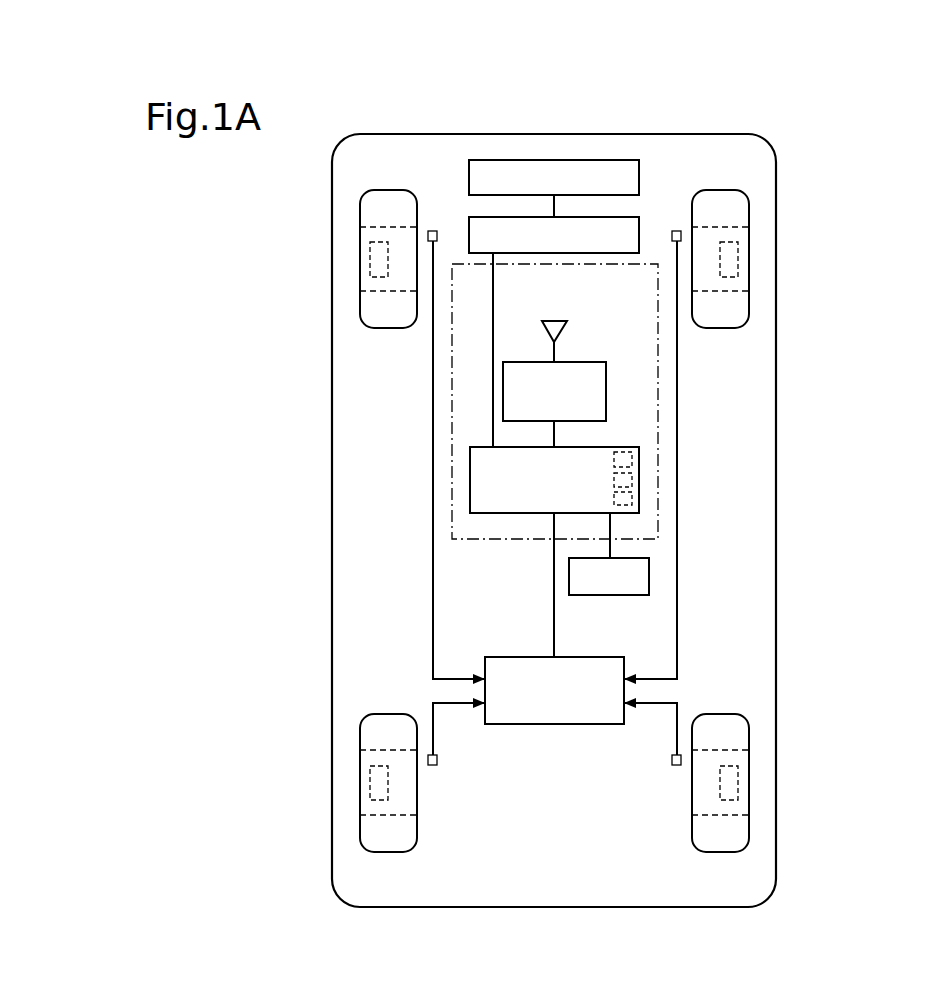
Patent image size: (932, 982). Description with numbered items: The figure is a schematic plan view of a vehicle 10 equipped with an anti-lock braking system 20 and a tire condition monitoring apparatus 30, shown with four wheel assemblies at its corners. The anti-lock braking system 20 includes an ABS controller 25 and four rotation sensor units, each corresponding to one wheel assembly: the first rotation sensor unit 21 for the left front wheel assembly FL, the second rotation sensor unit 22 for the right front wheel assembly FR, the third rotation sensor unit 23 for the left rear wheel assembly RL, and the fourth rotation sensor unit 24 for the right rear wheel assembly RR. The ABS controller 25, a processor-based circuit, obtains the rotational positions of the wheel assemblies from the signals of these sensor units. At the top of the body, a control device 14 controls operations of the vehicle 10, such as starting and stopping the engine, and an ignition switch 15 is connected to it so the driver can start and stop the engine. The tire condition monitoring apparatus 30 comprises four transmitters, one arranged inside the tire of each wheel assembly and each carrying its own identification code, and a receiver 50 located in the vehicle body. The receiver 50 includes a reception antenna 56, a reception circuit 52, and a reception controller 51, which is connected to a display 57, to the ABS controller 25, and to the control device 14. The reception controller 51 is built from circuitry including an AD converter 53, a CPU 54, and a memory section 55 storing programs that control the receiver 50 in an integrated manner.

The vehicle 10 is at (776, 119).
The control device 14 is at (625, 253).
The ignition switch 15 is at (610, 160).
The anti-lock braking system 20 is at (680, 410).
The first rotation sensor unit 21 is at (433, 231).
The second rotation sensor unit 22 is at (677, 231).
The third rotation sensor unit 23 is at (435, 765).
The fourth rotation sensor unit 24 is at (675, 765).
The ABS controller 25 is at (560, 725).
The tire condition monitoring apparatus 30 is at (690, 620).
The receiver 50 is at (460, 541).
The reception controller 51 is at (585, 447).
The reception circuit 52 is at (582, 362).
The AD converter 53 is at (632, 458).
The CPU 54 is at (632, 479).
The memory section 55 is at (632, 498).
The reception antenna 56 is at (565, 325).
The display 57 is at (623, 596).